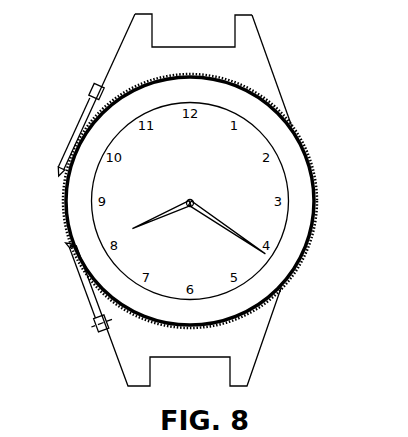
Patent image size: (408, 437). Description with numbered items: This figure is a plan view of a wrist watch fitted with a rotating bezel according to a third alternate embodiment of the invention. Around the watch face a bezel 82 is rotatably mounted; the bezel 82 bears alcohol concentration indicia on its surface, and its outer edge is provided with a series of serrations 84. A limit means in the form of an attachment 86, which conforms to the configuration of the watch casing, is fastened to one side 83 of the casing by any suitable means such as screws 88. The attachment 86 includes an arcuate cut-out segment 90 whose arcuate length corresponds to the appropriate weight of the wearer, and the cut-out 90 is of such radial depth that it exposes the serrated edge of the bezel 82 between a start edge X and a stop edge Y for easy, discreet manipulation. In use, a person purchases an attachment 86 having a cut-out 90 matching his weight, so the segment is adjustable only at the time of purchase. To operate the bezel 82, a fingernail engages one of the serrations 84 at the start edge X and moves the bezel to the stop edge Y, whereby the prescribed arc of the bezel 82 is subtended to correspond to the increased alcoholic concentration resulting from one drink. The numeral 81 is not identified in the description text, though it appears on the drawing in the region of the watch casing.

The watch case 81 is at (243, 65).
The bezel 82 is at (299, 174).
The side of the watch casing 83 is at (123, 45).
The serrations 84 is at (262, 98).
The attachment 86 is at (85, 125).
The screws 88 is at (91, 92).
The arcuate cut-out segment 90 is at (67, 197).
The start edge X is at (68, 241).
The stop edge Y is at (62, 172).